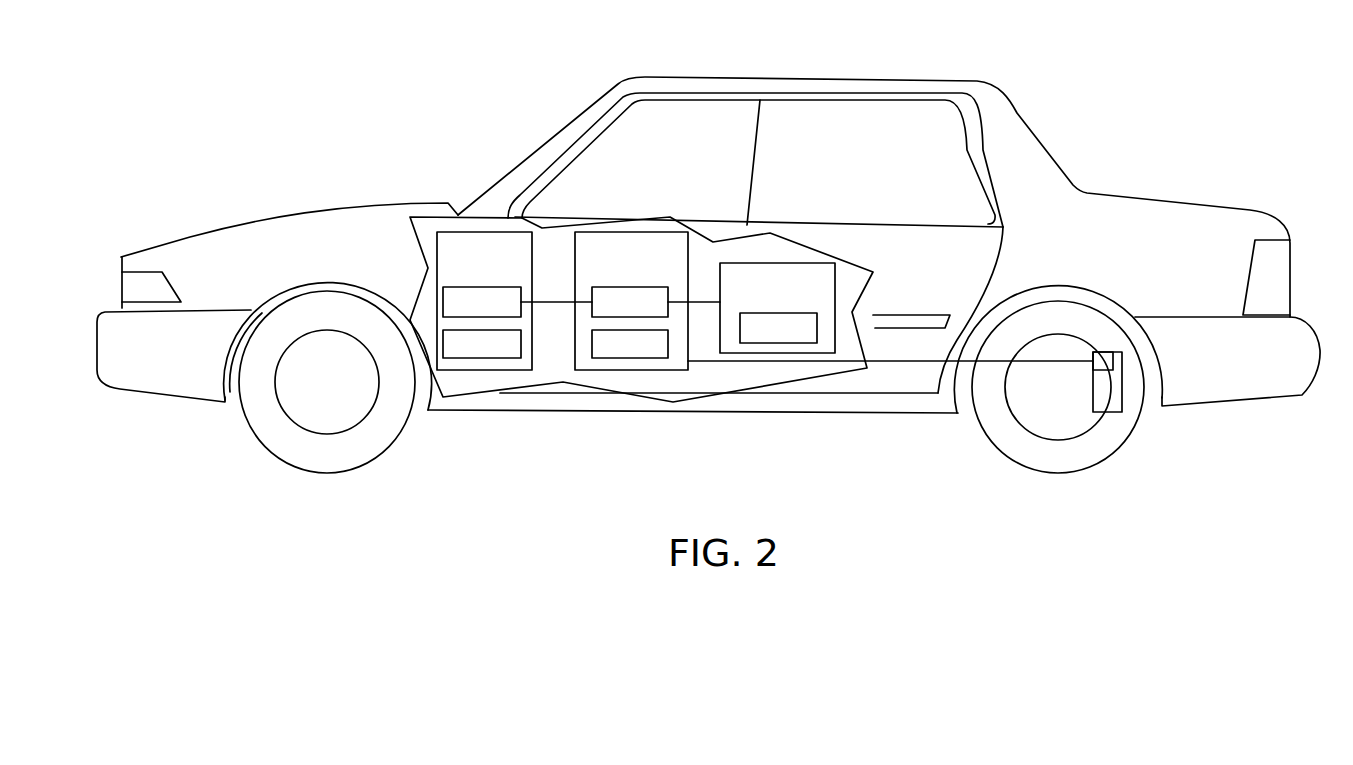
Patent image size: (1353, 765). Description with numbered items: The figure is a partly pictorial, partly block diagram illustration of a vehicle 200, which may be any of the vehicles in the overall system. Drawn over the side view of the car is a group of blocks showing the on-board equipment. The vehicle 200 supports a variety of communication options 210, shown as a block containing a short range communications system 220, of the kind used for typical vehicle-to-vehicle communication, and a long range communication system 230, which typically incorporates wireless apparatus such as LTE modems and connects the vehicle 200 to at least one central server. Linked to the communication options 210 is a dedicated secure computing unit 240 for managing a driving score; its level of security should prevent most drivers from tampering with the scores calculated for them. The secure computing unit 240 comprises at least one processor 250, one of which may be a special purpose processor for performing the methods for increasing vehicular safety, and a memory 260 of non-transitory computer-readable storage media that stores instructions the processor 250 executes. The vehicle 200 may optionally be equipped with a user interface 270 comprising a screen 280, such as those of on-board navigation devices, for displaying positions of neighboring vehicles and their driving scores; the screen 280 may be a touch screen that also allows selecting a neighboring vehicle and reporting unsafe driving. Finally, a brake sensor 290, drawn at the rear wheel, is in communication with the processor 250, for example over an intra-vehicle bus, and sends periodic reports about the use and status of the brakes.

The vehicle 200 is at (888, 80).
The communication options 210 is at (452, 232).
The short range communications system 220 is at (437, 302).
The long range communication system 230 is at (472, 358).
The secure computing unit 240 is at (622, 232).
The processor 250 is at (670, 297).
The memory 260 is at (612, 358).
The user interface 270 is at (785, 262).
The screen 280 is at (817, 325).
The brake sensor 290 is at (1123, 372).